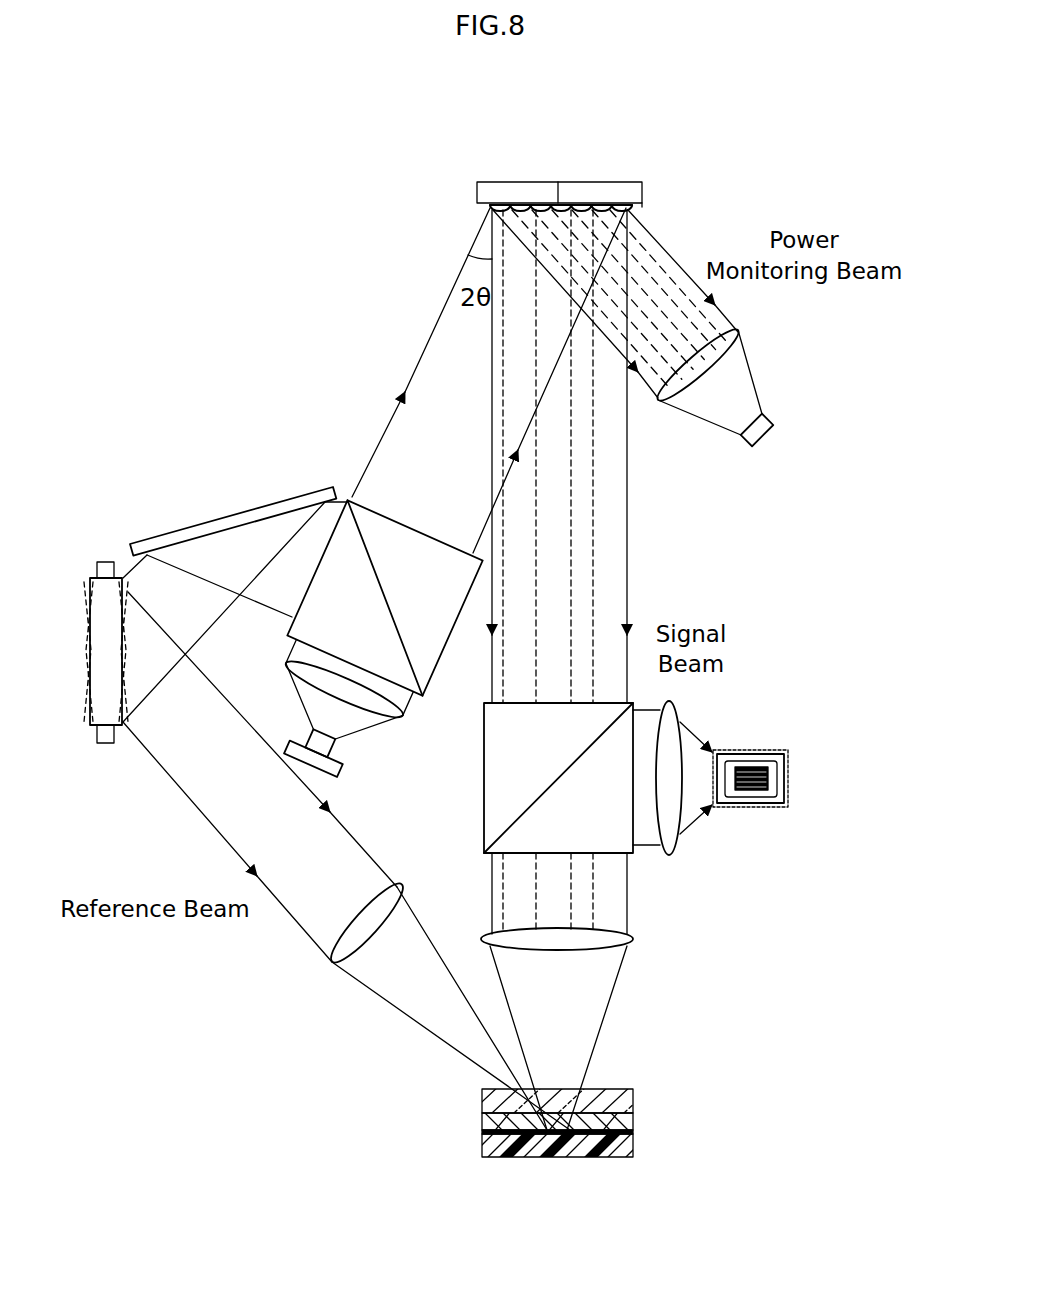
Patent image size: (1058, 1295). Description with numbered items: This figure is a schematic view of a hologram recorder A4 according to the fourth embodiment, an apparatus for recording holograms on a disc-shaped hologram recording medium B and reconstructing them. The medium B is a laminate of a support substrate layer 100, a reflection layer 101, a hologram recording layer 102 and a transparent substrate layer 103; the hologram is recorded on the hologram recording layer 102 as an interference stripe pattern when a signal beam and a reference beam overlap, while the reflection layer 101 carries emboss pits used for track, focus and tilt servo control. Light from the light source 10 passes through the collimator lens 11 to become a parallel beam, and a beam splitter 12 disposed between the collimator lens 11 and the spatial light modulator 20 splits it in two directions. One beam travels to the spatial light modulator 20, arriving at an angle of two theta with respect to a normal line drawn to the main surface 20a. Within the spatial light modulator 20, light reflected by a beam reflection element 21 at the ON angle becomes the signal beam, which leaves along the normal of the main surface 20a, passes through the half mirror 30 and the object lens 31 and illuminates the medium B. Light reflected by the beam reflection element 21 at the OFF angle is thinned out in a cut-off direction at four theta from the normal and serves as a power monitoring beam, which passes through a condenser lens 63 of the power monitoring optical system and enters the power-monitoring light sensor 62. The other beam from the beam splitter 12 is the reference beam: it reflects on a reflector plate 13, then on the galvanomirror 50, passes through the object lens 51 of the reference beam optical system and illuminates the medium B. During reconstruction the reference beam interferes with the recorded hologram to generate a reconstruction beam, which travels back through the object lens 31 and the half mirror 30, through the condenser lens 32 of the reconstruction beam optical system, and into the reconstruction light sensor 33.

The light source 10 is at (342, 767).
The collimator lens 11 is at (401, 713).
The beam splitter 12 is at (368, 518).
The reflector plate 13 is at (205, 524).
The spatial light modulator 20 is at (498, 192).
The main surface 20a is at (643, 208).
The beam reflection element 21 is at (528, 211).
The half mirror 30 is at (483, 830).
The object lens 31 is at (633, 940).
The condenser lens 32 is at (669, 856).
The reconstruction light sensor 33 is at (760, 808).
The galvanomirror 50 is at (90, 578).
The object lens 51 is at (334, 966).
The power-monitoring light sensor 62 is at (768, 440).
The condenser lens 63 is at (745, 331).
The support substrate layer 100 is at (629, 1155).
The reflection layer 101 is at (629, 1134).
The hologram recording layer 102 is at (629, 1127).
The transparent substrate layer 103 is at (629, 1100).
The hologram recorder A4 is at (596, 128).
The hologram recording medium B is at (462, 1124).